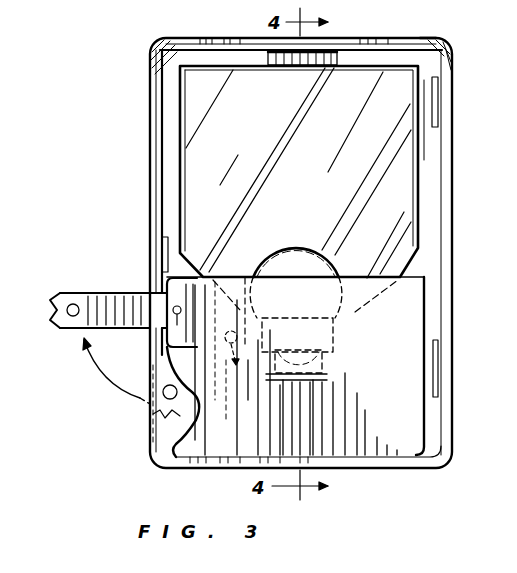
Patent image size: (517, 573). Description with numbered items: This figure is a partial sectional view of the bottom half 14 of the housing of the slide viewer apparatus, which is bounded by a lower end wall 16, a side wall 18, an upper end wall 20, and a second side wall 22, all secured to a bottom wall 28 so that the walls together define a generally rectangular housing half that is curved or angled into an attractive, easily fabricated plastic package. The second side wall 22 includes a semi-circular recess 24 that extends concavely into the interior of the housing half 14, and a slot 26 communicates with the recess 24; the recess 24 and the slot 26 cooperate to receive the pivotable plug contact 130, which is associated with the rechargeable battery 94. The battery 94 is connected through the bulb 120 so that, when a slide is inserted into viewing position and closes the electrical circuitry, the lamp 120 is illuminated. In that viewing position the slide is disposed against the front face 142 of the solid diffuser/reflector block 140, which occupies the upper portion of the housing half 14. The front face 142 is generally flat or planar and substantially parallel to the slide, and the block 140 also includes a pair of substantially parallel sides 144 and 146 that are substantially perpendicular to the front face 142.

The bottom half 14 is at (458, 146).
The lower end wall 16 is at (377, 460).
The side wall 18 is at (443, 220).
The upper end wall 20 is at (432, 37).
The second side wall 22 is at (160, 168).
The semi-circular recess 24 is at (158, 428).
The slot 26 is at (156, 340).
The bottom wall 28 is at (430, 267).
The rechargeable battery 94 is at (413, 435).
The bulb 120 is at (344, 302).
The pivotable plug contact 130 is at (84, 293).
The solid diffuser/reflector block 140 is at (352, 97).
The front face 142 is at (219, 66).
The side 144 is at (178, 98).
The side 146 is at (422, 172).